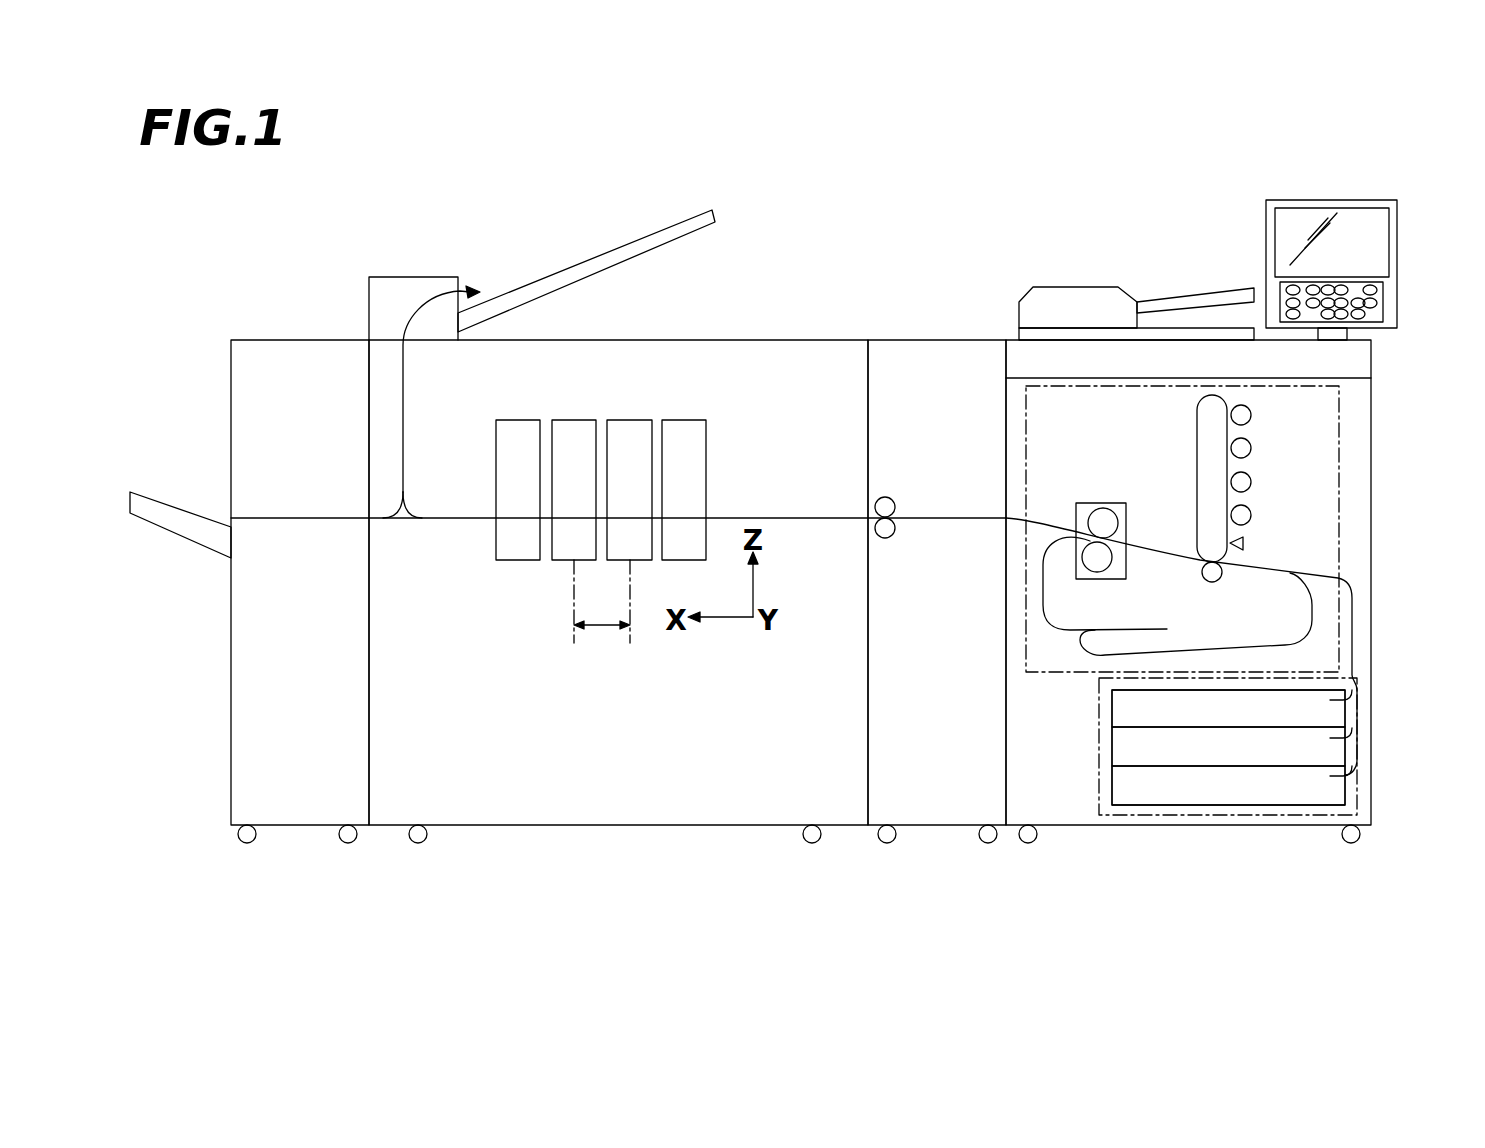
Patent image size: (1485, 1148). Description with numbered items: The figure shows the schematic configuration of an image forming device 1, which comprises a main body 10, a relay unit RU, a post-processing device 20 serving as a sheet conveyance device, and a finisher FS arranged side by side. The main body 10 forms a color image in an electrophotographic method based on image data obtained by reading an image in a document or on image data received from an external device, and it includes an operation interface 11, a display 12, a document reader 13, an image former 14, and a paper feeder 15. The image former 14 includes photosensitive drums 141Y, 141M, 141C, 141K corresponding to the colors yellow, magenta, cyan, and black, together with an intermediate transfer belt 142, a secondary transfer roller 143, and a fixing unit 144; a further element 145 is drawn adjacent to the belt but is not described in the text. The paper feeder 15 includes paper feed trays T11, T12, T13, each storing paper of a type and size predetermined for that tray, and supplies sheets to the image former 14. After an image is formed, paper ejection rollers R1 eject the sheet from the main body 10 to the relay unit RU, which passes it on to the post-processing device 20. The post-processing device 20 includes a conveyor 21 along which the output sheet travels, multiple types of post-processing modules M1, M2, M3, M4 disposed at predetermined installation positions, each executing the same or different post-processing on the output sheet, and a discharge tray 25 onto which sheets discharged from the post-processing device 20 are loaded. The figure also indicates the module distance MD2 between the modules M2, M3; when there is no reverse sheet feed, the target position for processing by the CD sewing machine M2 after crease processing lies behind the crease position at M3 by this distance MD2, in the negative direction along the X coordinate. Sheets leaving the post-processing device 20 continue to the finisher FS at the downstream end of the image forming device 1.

The image forming device 1 is at (1166, 180).
The main body 10 is at (1152, 823).
The operation interface 11 is at (1378, 308).
The display 12 is at (1368, 248).
The document reader 13 is at (1098, 288).
The image former 14 is at (1340, 466).
The photosensitive drum 141Y is at (1248, 412).
The photosensitive drum 141M is at (1248, 445).
The photosensitive drum 141C is at (1248, 479).
The photosensitive drum 141K is at (1248, 512).
The intermediate transfer belt 142 is at (1197, 452).
The secondary transfer roller 143 is at (1222, 578).
The fixing unit 144 is at (1104, 502).
The cleaning unit 145 is at (1245, 548).
The paper feeder 15 is at (1358, 733).
The paper feed tray T11 is at (1117, 712).
The paper feed tray T12 is at (1117, 749).
The paper feed tray T13 is at (1117, 787).
The post-processing device 20 is at (627, 826).
The conveyor 21 is at (724, 496).
The discharge tray 25 is at (674, 230).
The post-processing module M1 is at (676, 426).
The post-processing module M2 is at (626, 426).
The post-processing module M3 is at (570, 426).
The post-processing module M4 is at (513, 426).
The module distance MD2 is at (605, 628).
The paper ejection rollers R1 is at (893, 512).
The relay unit RU is at (932, 826).
The finisher FS is at (295, 826).